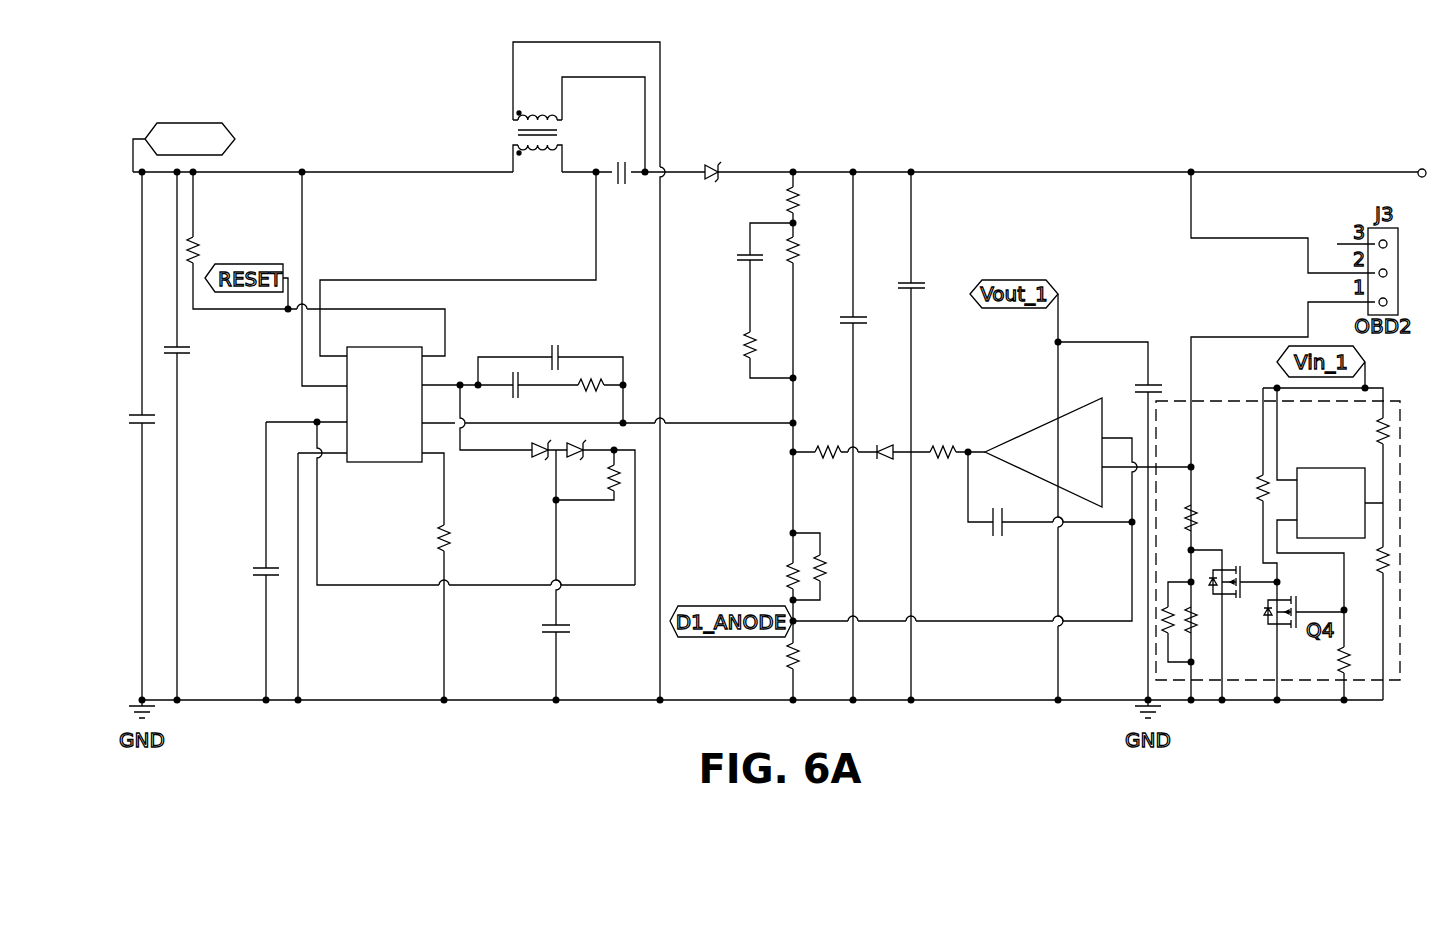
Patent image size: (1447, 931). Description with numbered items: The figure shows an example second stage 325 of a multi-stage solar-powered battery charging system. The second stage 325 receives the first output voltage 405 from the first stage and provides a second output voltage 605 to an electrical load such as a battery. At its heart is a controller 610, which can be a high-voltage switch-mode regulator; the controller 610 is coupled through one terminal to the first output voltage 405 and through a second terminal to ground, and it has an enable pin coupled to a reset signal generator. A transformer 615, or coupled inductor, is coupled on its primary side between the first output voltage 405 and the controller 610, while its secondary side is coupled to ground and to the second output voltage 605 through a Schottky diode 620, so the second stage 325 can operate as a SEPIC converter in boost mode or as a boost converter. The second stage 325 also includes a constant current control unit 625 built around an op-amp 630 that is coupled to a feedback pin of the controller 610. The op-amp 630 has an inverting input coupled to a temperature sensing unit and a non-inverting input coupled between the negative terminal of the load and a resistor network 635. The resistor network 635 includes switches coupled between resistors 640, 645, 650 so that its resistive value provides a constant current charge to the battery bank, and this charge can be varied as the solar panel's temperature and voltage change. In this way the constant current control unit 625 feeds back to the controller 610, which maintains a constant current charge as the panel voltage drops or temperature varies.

The second stage 325 is at (1253, 88).
The first output voltage 405 is at (228, 132).
The second output voltage 605 is at (1355, 175).
The controller 610 is at (401, 416).
The transformer 615 is at (540, 115).
The Schottky diode 620 is at (710, 165).
The constant current control unit 625 is at (1143, 292).
The op-amp 630 is at (1023, 430).
The resistor network 635 is at (1310, 688).
The resistor 640 is at (1196, 486).
The resistor 645 is at (1161, 631).
The resistor 650 is at (1200, 622).